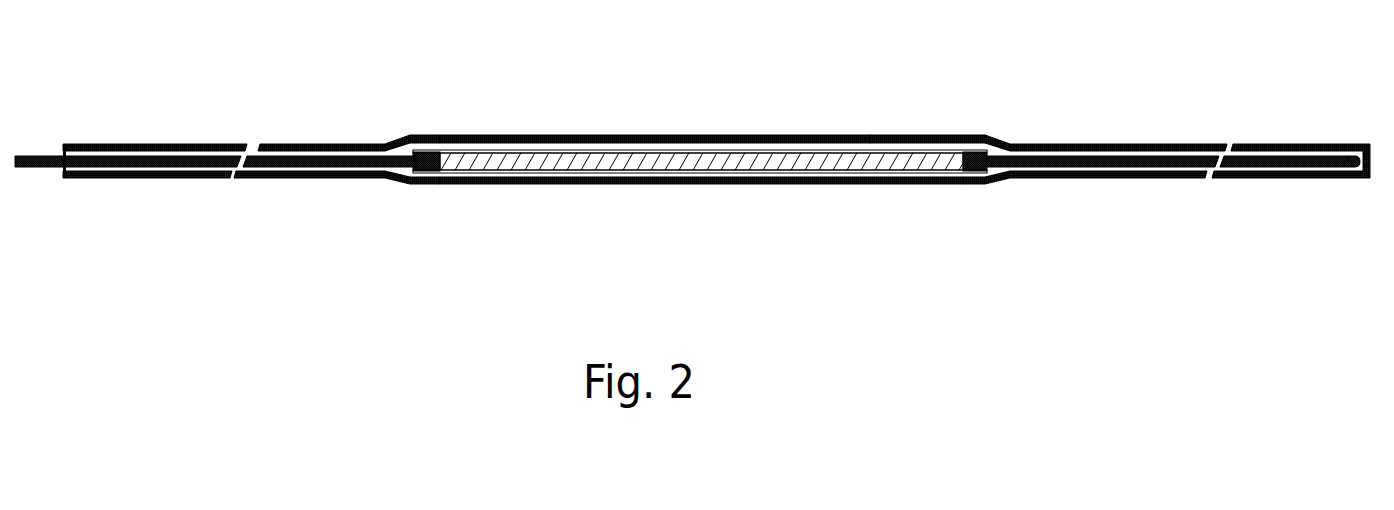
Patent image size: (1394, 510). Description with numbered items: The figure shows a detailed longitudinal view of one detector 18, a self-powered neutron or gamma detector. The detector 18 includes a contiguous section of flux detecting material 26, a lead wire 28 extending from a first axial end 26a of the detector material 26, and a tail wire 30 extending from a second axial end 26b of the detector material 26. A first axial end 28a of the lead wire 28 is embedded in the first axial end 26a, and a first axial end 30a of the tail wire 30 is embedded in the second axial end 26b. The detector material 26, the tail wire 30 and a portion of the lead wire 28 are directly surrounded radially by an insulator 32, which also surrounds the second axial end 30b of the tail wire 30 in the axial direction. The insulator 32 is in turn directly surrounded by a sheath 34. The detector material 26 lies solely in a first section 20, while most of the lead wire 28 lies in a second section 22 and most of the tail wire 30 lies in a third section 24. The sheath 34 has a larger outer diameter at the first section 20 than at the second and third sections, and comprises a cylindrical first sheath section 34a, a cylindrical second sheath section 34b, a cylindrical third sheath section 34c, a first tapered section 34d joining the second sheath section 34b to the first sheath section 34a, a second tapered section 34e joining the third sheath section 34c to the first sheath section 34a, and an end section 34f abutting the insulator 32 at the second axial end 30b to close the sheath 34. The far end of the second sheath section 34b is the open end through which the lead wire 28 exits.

The detector 18 is at (985, 102).
The first section 20 is at (676, 130).
The second section 22 is at (208, 132).
The third section 24 is at (1197, 128).
The flux detecting material 26 is at (819, 160).
The first axial end of detector material 26a is at (410, 143).
The second axial end of detector material 26b is at (985, 147).
The lead wire 28 is at (310, 143).
The first axial end of lead wire 28a is at (427, 172).
The tail wire 30 is at (1090, 150).
The first axial end of tail wire 30a is at (972, 172).
The second axial end of tail wire 30b is at (1353, 169).
The insulator 32 is at (712, 143).
The sheath 34 is at (755, 142).
The first sheath section 34a is at (885, 137).
The second sheath section 34b is at (140, 143).
The third sheath section 34c is at (1142, 145).
The first tapered section 34d is at (395, 179).
The second tapered section 34e is at (1003, 178).
The end section 34f is at (1373, 148).